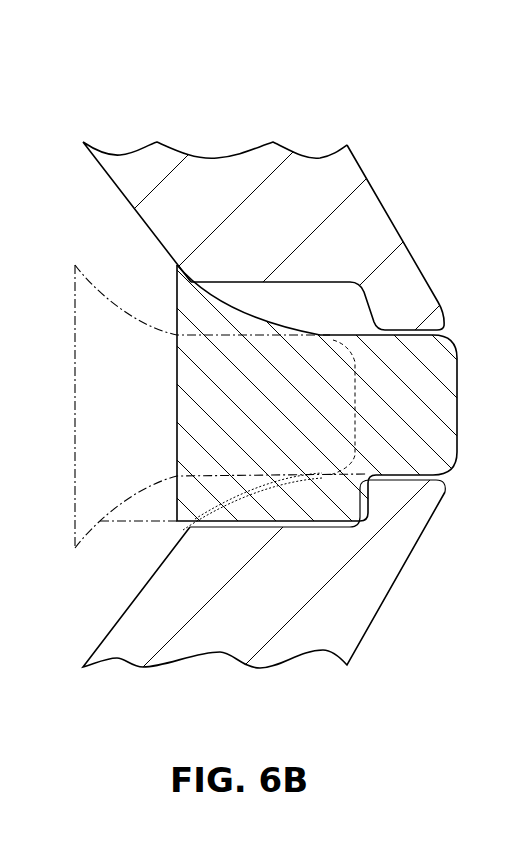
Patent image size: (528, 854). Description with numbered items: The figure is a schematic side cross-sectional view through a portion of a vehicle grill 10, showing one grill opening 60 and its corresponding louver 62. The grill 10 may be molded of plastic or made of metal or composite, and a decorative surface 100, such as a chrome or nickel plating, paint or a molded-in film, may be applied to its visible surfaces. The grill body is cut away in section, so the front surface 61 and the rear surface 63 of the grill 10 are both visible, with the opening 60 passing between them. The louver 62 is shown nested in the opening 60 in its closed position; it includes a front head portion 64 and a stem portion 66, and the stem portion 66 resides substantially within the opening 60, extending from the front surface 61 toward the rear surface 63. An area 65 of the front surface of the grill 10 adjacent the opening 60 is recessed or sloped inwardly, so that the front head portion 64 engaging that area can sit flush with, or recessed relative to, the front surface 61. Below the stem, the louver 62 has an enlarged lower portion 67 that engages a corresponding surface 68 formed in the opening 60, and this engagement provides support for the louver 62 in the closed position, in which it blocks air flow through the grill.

The grill 10 is at (430, 133).
The decorative surface 100 is at (76, 152).
The front surface 61 is at (130, 206).
The rear surface 63 is at (410, 252).
The grill opening 60 is at (447, 330).
The louver 62 is at (432, 427).
The front head portion 64 is at (177, 298).
The stem portion 66 is at (430, 376).
The recessed area 65 is at (145, 235).
The enlarged lower portion 67 is at (343, 500).
The corresponding surface 68 is at (327, 527).